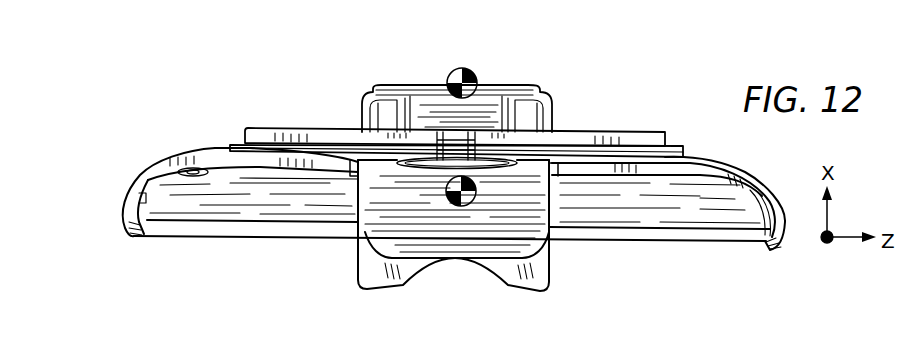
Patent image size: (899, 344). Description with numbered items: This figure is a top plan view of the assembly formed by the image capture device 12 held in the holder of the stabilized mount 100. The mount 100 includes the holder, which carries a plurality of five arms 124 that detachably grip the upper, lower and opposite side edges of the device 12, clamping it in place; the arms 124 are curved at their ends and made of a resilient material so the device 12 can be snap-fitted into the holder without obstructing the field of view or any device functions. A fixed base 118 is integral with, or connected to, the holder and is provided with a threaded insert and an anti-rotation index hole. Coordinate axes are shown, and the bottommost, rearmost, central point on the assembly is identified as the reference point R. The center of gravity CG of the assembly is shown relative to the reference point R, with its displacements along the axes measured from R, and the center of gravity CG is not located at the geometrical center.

The stabilized mount 100 is at (186, 140).
The fixed base 118 is at (641, 121).
The image capture device 12 is at (661, 241).
The arms 124 is at (552, 280).
The reference point R is at (430, 74).
The center of gravity CG is at (431, 205).